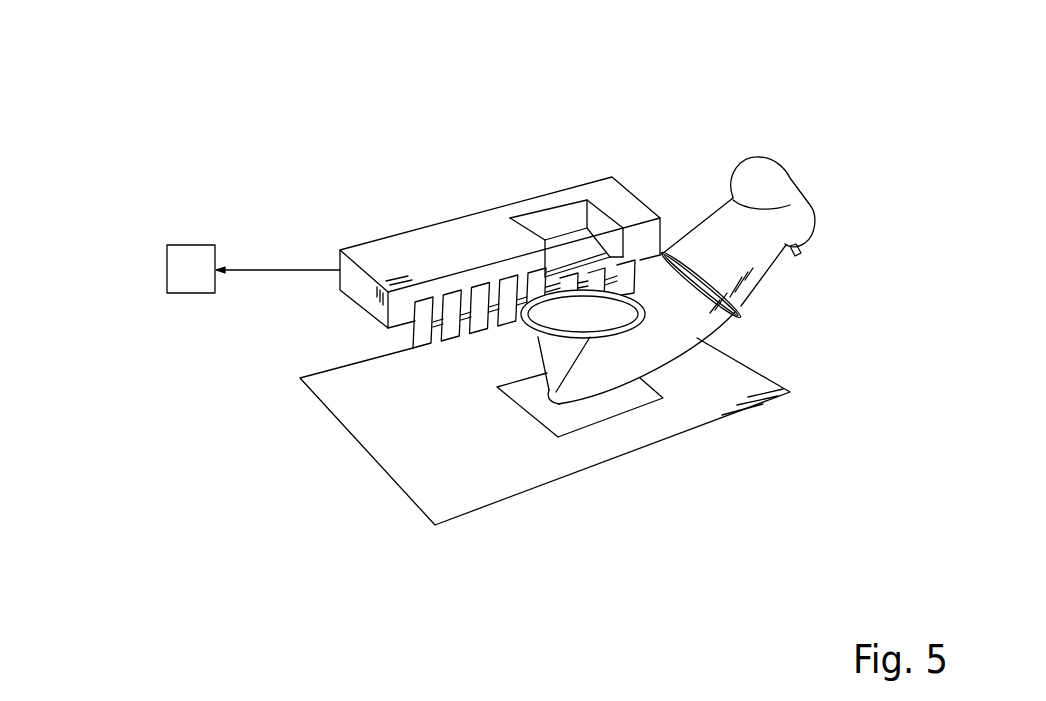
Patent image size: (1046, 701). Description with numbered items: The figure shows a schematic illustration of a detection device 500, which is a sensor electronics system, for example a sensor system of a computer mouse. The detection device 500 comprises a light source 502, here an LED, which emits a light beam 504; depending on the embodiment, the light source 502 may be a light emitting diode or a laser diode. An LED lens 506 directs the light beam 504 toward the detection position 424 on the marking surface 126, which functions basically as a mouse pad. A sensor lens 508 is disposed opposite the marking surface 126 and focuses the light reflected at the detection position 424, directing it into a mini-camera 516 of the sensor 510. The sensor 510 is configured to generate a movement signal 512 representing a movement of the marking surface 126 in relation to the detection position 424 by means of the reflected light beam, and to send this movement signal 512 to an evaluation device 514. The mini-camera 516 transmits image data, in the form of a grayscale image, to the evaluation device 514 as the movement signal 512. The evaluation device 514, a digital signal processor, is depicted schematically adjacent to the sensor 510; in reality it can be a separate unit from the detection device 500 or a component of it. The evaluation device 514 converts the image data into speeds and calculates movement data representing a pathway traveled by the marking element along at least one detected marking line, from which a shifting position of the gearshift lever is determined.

The detection device 500 is at (307, 163).
The light source 502 is at (790, 184).
The light beam 504 is at (762, 267).
The LED lens 506 is at (742, 320).
The sensor lens 508 is at (563, 338).
The sensor 510 is at (476, 212).
The movement signal 512 is at (277, 272).
The evaluation device 514 is at (192, 295).
The mini-camera 516 is at (563, 242).
The detection position 424 is at (612, 415).
The marking surface 126 is at (675, 411).